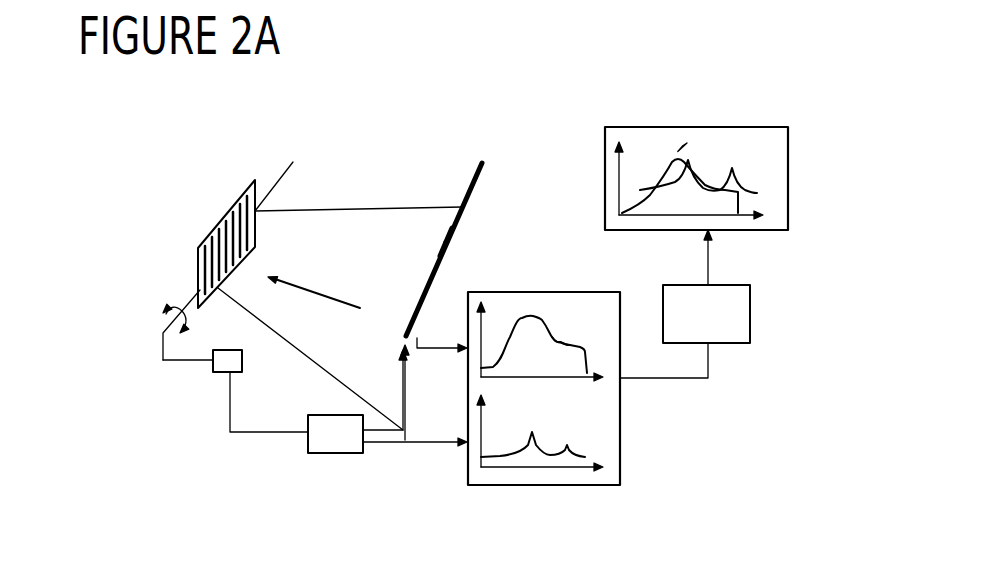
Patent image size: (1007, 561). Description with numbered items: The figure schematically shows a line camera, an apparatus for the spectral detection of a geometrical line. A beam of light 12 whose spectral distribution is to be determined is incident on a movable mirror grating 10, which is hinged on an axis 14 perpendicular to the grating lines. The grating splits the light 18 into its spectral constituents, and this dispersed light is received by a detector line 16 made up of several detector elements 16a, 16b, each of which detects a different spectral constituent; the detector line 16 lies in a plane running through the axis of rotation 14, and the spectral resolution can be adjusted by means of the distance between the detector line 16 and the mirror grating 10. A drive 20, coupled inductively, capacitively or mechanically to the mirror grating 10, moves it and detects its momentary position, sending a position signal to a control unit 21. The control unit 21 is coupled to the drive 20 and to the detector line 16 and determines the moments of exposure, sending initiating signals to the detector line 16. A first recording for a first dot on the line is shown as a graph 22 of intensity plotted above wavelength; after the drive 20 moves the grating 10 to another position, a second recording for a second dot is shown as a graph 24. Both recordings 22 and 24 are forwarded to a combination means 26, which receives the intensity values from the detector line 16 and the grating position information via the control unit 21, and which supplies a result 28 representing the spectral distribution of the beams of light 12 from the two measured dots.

The movable mirror grating 10 is at (255, 182).
The beam of light 12 is at (320, 292).
The axis 14 is at (197, 293).
The detector line 16 is at (482, 165).
The detector element 16a is at (448, 257).
The detector element 16b is at (448, 250).
The light 18 is at (368, 168).
The drive 20 is at (242, 362).
The control unit 21 is at (357, 453).
The graph 22 is at (681, 148).
The graph 24 is at (604, 428).
The combination means 26 is at (750, 318).
The result 28 is at (741, 141).